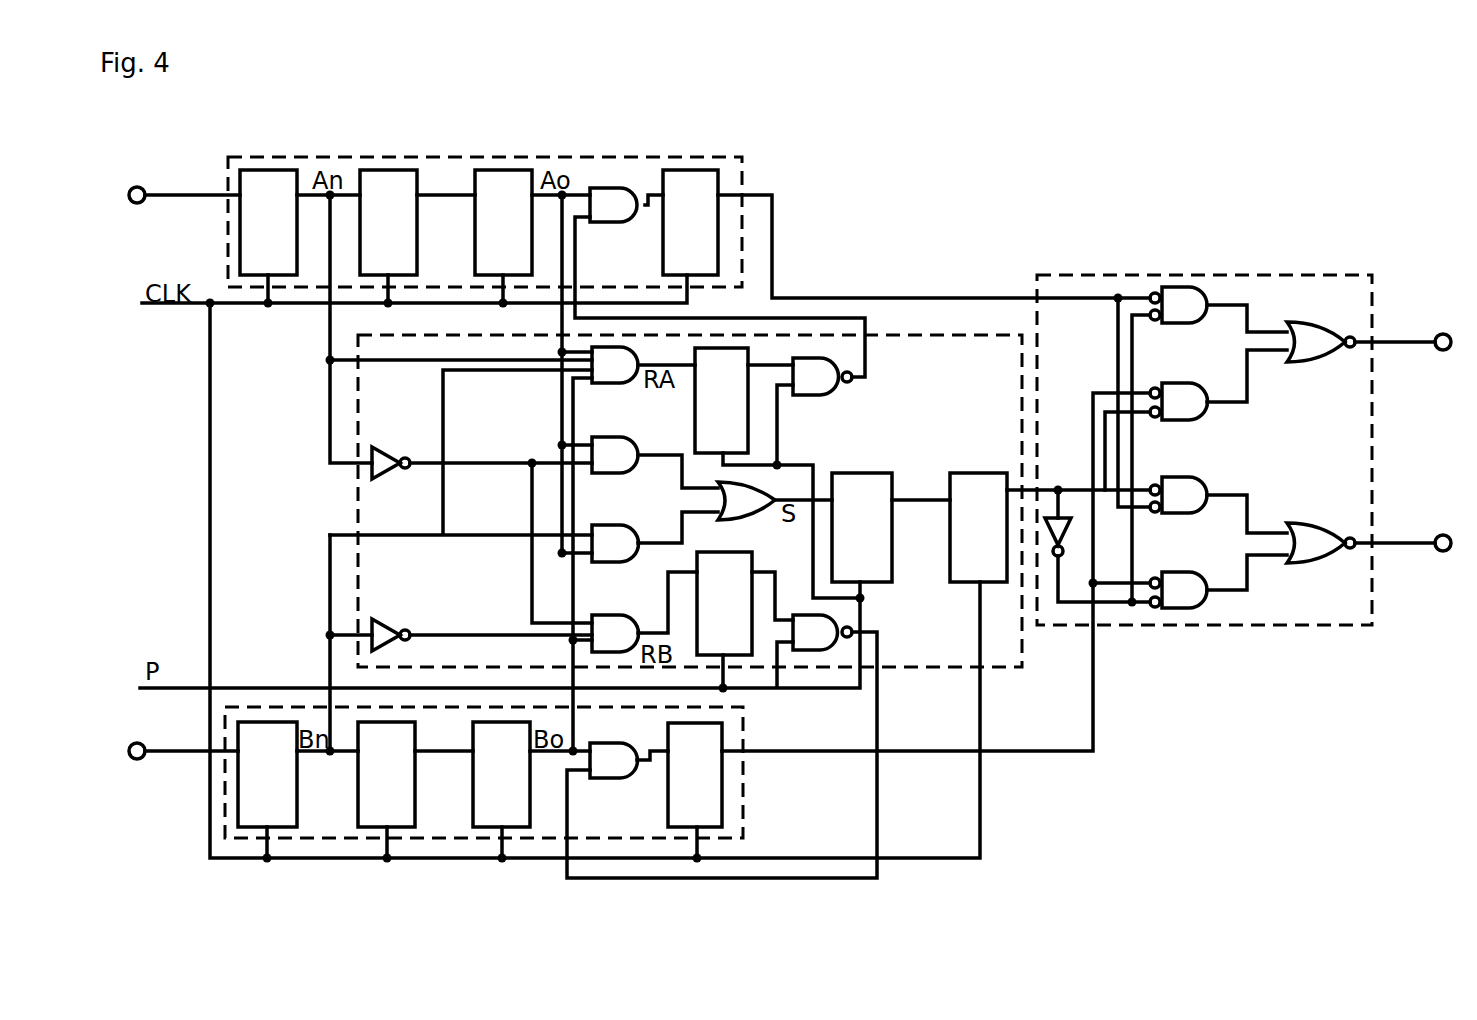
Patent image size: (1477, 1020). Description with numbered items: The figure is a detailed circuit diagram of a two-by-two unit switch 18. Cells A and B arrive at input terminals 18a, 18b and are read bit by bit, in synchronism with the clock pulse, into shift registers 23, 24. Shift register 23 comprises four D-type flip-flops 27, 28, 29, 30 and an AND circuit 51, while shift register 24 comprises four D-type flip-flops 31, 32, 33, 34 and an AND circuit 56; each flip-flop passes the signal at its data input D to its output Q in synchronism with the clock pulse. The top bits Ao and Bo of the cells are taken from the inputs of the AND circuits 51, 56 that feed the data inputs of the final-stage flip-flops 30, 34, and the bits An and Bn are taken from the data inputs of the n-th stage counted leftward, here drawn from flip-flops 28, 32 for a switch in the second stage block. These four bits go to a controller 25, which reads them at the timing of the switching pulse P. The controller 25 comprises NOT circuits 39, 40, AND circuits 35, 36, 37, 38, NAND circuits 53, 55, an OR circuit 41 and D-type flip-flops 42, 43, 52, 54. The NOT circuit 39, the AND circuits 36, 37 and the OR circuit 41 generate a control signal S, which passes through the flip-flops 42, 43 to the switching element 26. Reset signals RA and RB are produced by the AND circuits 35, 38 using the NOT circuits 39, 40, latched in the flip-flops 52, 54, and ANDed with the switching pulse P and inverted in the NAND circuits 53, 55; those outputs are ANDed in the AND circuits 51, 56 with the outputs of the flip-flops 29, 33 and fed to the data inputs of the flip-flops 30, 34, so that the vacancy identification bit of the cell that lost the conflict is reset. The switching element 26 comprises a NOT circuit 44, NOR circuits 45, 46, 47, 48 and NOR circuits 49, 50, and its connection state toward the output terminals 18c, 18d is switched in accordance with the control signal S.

The 2×2 unit switch 18 is at (992, 212).
The input terminal 18a is at (137, 205).
The input terminal 18b is at (137, 760).
The output terminal 18c is at (1440, 334).
The output terminal 18d is at (1440, 535).
The shift register 23 is at (742, 188).
The shift register 24 is at (743, 797).
The controller 25 is at (915, 668).
The switching element 26 is at (1283, 625).
The D-type flip-flop 27 is at (255, 170).
The D-type flip-flop 28 is at (380, 170).
The D-type flip-flop 29 is at (497, 170).
The D-type flip-flop 30 is at (683, 170).
The D-type flip-flop 31 is at (297, 790).
The D-type flip-flop 32 is at (415, 790).
The D-type flip-flop 33 is at (517, 827).
The D-type flip-flop 34 is at (722, 813).
The AND circuit 35 is at (605, 383).
The AND circuit 36 is at (602, 473).
The AND circuit 37 is at (600, 562).
The AND circuit 38 is at (640, 600).
The NOT circuit 39 is at (380, 447).
The NOT circuit 40 is at (375, 619).
The OR circuit 41 is at (755, 520).
The D-type flip-flop 42 is at (860, 473).
The D-type flip-flop 43 is at (960, 473).
The NOT circuit 44 is at (1058, 515).
The NOR circuit 45 is at (1183, 323).
The NOR circuit 46 is at (1200, 420).
The NOR circuit 47 is at (1195, 513).
The NOR circuit 48 is at (1205, 600).
The NOR circuit 49 is at (1312, 364).
The NOR circuit 50 is at (1322, 565).
The AND circuit 51 is at (598, 222).
The D-type flip-flop 52 is at (695, 440).
The NAND circuit 53 is at (808, 395).
The D-type flip-flop 54 is at (740, 655).
The NAND circuit 55 is at (840, 625).
The AND circuit 56 is at (602, 778).